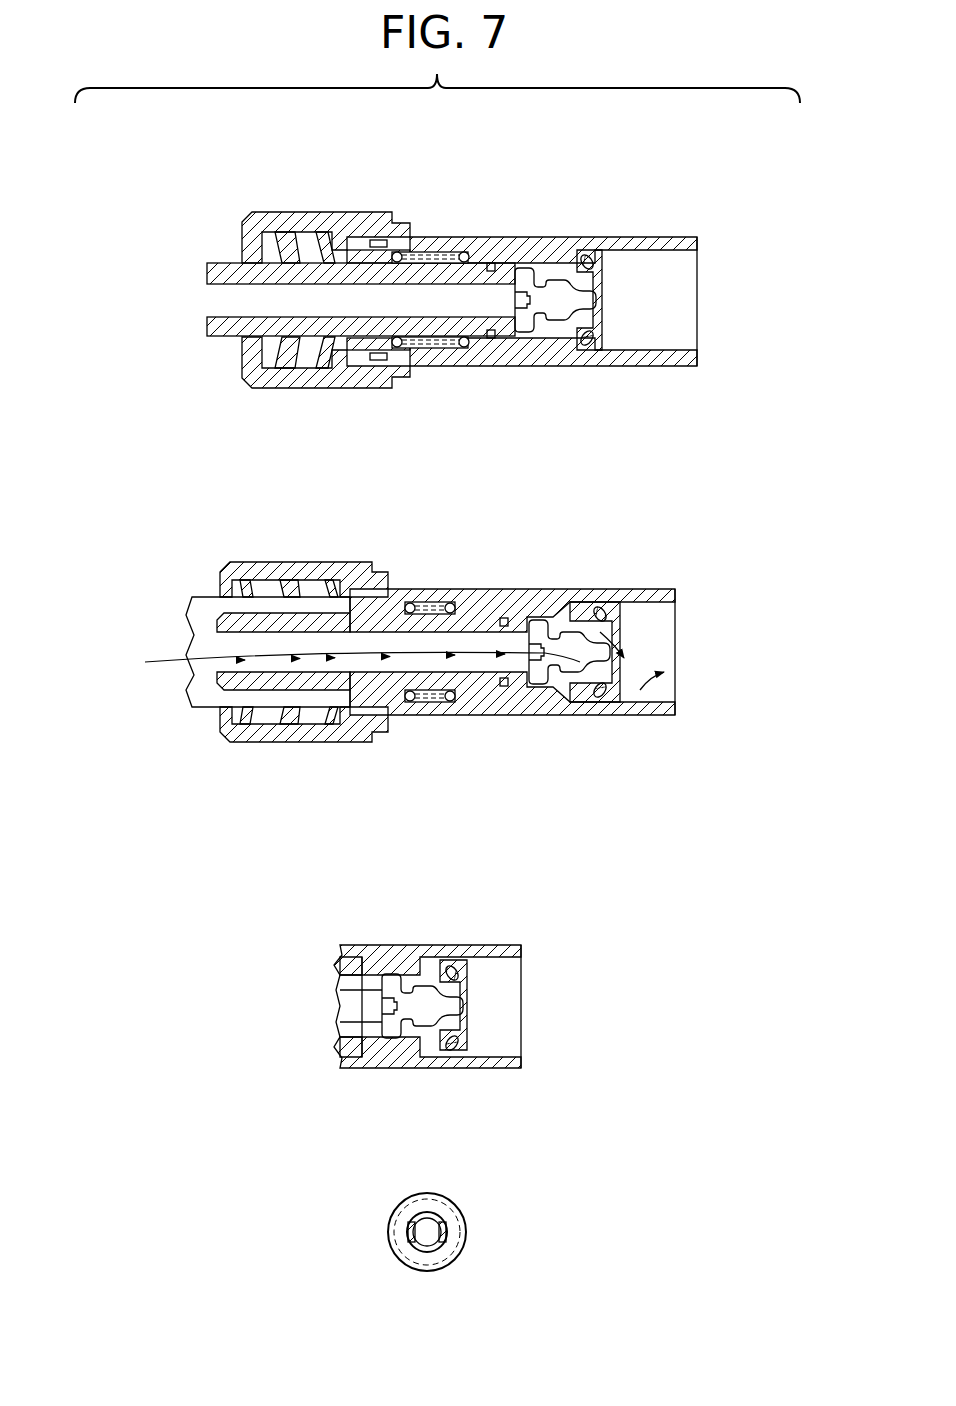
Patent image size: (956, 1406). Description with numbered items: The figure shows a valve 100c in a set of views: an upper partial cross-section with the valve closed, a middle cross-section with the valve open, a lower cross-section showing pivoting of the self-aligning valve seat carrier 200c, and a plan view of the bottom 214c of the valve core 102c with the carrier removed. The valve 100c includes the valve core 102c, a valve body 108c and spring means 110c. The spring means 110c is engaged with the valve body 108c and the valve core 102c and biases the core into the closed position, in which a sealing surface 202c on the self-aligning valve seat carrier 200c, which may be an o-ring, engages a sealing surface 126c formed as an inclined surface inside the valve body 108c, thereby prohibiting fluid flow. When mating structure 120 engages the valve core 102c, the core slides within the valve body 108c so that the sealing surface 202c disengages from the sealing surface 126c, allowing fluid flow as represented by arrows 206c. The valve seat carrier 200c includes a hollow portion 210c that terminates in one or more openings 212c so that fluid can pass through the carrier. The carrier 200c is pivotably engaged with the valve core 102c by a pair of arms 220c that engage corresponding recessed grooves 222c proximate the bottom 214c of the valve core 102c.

The valve 100c is at (500, 176).
The valve core 102c is at (294, 346).
The valve body 108c is at (565, 234).
The spring means 110c is at (469, 364).
The mating structure 120 is at (208, 597).
The sealing surface 126c is at (597, 258).
The self-aligning valve seat carrier 200c is at (610, 298).
The sealing surface 202c is at (575, 346).
The arrows 206c is at (410, 660).
The hollow portion 210c is at (520, 332).
The openings 212c is at (553, 322).
The bottom 214c is at (478, 1261).
The arms 220c is at (405, 975).
The recessed grooves 222c is at (440, 1236).